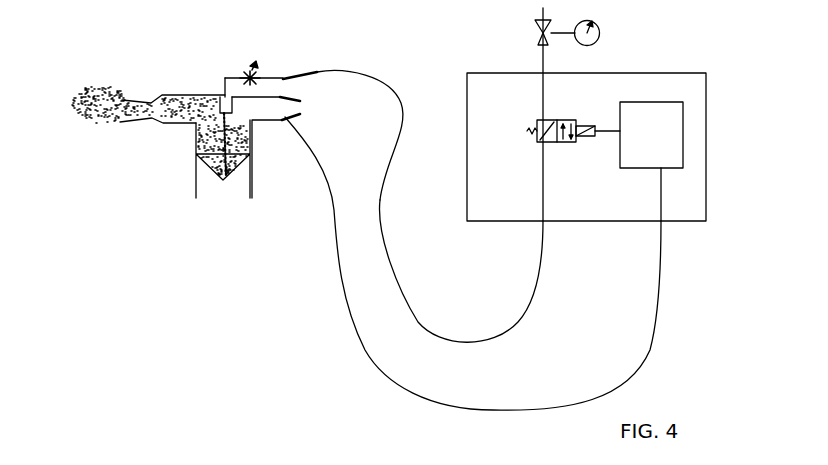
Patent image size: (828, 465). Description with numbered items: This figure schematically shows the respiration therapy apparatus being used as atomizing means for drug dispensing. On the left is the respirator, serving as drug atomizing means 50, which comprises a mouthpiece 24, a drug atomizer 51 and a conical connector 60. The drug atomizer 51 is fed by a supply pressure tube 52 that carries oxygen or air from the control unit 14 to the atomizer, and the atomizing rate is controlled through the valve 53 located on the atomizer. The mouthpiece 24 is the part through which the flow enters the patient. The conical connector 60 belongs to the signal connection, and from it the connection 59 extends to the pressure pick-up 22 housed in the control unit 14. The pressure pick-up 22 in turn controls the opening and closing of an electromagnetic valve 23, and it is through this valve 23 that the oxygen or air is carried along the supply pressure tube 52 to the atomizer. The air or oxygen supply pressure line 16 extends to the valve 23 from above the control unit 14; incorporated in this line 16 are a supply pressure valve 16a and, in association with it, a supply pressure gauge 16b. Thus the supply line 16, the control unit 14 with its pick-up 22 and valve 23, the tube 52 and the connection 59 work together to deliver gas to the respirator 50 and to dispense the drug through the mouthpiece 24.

The control unit 14 is at (657, 69).
The supply pressure line 16 is at (547, 13).
The supply pressure valve 16a is at (548, 24).
The supply pressure gauge 16b is at (598, 40).
The pressure pick-up 22 is at (673, 137).
The electromagnetic valve 23 is at (568, 142).
The mouthpiece 24 is at (138, 103).
The drug atomizing means 50 is at (197, 77).
The drug atomizer 51 is at (193, 183).
The supply pressure tube 52 is at (456, 340).
The valve 53 is at (262, 74).
The connection 59 is at (378, 377).
The conical connector 60 is at (295, 100).